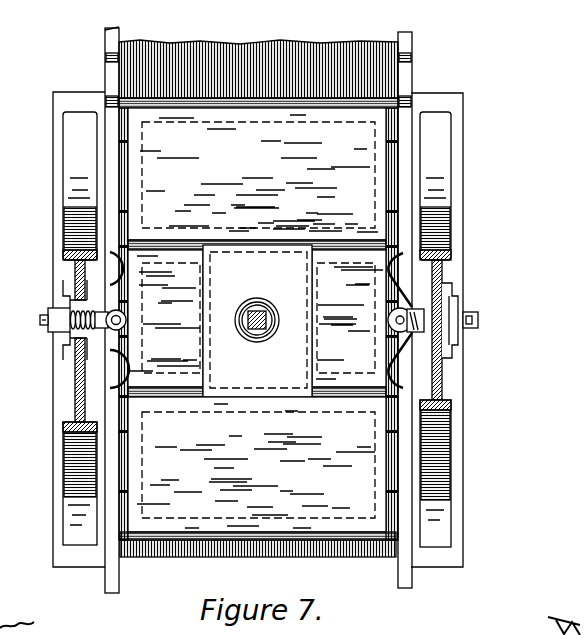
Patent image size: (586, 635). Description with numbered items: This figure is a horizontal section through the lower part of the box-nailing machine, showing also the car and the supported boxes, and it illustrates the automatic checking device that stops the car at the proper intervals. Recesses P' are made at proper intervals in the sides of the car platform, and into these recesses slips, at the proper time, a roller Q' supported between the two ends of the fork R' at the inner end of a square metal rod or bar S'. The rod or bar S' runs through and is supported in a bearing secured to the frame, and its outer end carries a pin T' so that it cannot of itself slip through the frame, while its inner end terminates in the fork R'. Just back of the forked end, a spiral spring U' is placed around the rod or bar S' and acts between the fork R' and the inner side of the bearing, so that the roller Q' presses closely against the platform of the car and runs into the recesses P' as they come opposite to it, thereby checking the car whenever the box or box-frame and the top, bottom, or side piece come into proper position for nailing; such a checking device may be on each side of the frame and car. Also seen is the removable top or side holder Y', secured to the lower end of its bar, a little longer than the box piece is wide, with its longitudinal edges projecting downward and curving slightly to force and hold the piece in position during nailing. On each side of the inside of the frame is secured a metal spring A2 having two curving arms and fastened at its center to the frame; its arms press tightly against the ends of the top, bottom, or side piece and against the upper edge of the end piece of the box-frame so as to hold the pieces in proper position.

The recesses P' is at (261, 329).
The roller Q' is at (473, 317).
The removable top or side holder Y' is at (257, 321).
The square metal rod or bar S' is at (37, 310).
The pin T' is at (59, 320).
The block b' is at (59, 320).
The spiral spring U' is at (86, 307).
The fork R' is at (253, 320).
The metal spring A2 is at (112, 366).